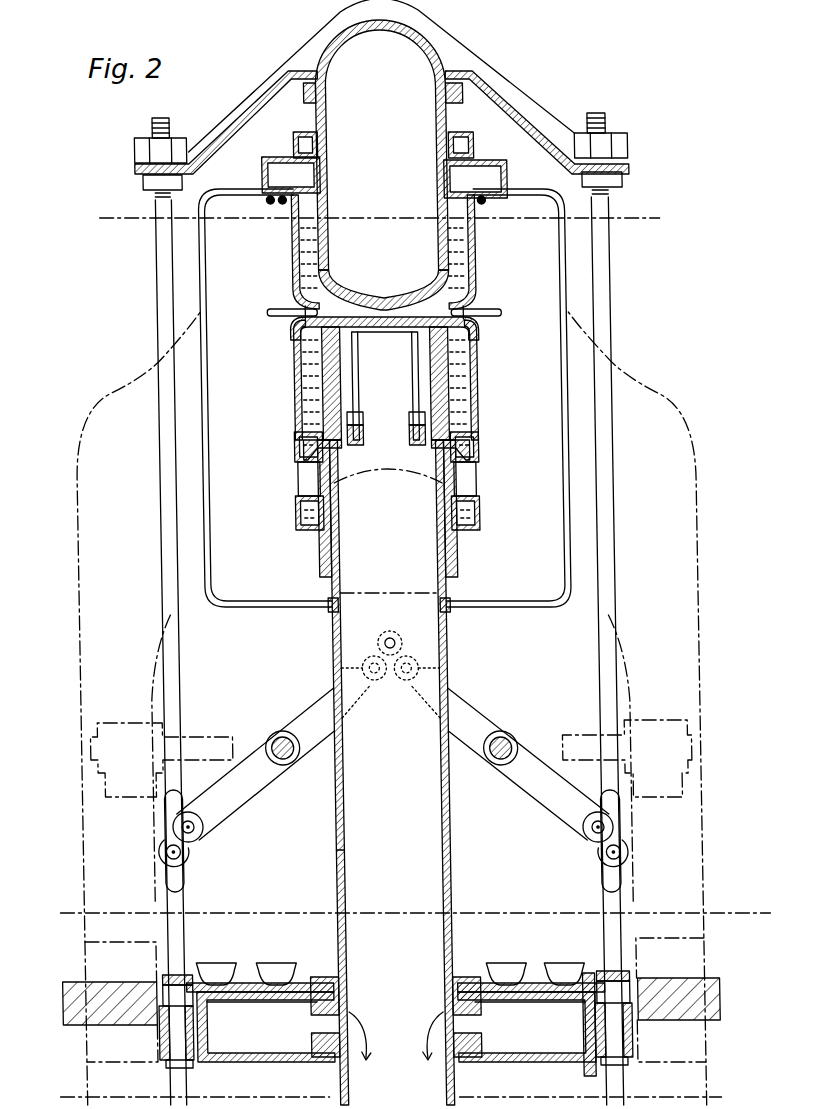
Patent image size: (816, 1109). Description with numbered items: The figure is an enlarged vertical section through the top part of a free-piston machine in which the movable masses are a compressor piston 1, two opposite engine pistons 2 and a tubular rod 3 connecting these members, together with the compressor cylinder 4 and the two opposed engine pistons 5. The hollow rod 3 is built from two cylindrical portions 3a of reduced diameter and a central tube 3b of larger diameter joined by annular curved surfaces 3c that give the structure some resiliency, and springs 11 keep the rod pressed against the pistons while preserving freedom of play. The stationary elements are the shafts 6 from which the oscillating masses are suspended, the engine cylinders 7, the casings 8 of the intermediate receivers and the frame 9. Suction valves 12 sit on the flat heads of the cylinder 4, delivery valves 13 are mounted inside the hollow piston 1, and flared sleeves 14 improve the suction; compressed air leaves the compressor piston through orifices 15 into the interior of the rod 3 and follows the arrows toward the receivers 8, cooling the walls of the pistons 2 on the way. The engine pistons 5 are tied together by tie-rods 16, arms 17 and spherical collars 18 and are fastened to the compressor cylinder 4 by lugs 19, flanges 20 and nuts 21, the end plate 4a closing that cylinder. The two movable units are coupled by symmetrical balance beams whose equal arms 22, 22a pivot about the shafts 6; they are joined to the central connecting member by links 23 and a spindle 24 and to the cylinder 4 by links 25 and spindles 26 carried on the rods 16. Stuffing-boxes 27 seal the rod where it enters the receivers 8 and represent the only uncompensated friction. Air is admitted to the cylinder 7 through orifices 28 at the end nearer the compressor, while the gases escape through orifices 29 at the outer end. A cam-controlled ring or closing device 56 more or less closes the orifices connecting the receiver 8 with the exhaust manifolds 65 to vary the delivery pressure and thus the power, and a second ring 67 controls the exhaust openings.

The compressor piston 1 is at (396, 1027).
The engine pistons 2 is at (328, 378).
The rod 3 is at (391, 772).
The cylindrical portions 3a is at (414, 397).
The central tube 3b is at (438, 860).
The annular curved surfaces 3c is at (426, 436).
The cylinder of the air compressor 4 is at (183, 1086).
The end plate 4a is at (227, 980).
The engine pistons 5 is at (432, 128).
The shafts 6 is at (268, 732).
The engine cylinders 7 is at (448, 546).
The casings of the intermediate receivers 8 is at (198, 511).
The frame 9 is at (104, 414).
The springs 11 is at (335, 418).
The suction valves 12 is at (198, 975).
The delivery valves 13 is at (212, 994).
The flared sleeves 14 is at (272, 970).
The orifices 15 is at (328, 1012).
The tie-rods 16 is at (153, 328).
The arms 17 is at (235, 128).
The spherical collars 18 is at (342, 37).
The lugs 19 is at (148, 1053).
The flanges 20 is at (161, 988).
The nuts 21 is at (163, 980).
The lever or balance beam arm 22 is at (226, 792).
The balance beam arm 22a is at (466, 684).
The links 23 is at (389, 645).
The spindle 24 is at (381, 631).
The links 25 is at (583, 838).
The spindles 26 is at (608, 852).
The stuffing-boxes 27 is at (316, 603).
The orifices 28 is at (318, 478).
The orifices 29 is at (318, 176).
The ring 56 is at (276, 204).
The exhaust manifolds 65 is at (479, 161).
The ring 67 is at (441, 168).